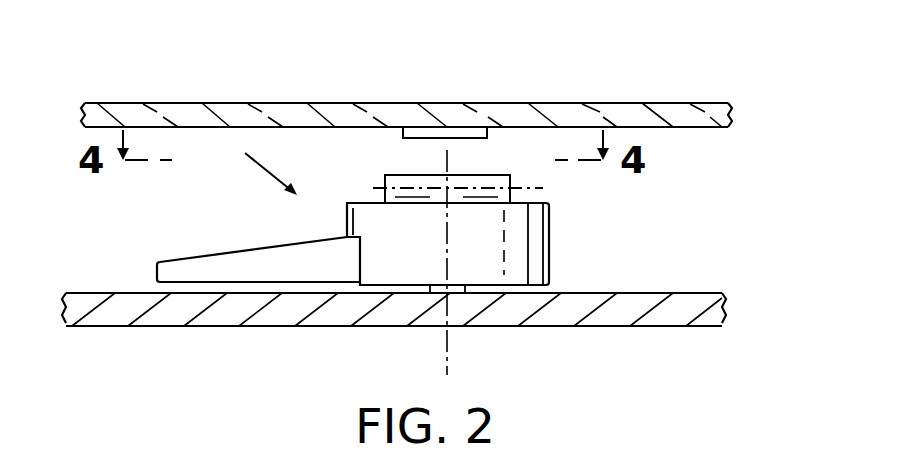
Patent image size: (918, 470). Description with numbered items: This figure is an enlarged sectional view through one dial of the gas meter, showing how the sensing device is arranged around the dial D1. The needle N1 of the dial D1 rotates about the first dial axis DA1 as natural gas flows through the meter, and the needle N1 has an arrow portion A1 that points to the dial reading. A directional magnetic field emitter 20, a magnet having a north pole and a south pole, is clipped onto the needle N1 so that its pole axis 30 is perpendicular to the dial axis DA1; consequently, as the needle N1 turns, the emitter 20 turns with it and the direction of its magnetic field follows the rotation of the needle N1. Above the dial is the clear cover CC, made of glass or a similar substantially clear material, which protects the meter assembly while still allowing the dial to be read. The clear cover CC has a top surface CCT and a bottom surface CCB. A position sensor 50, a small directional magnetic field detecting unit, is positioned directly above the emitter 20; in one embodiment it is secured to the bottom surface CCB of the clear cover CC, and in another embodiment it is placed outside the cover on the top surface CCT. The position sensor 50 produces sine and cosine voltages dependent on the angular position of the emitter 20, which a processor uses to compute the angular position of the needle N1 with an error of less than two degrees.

The clear cover CC is at (684, 104).
The top surface of clear cover CCT is at (235, 102).
The bottom surface of clear cover CCB is at (702, 130).
The directional magnetic field emitter 20 is at (400, 178).
The pole axis 30 is at (532, 180).
The position sensor 50 is at (468, 128).
The needle N1 is at (556, 230).
The arrow portion A1 is at (242, 272).
The first dial axis DA1 is at (447, 350).
The dial D1 is at (256, 164).